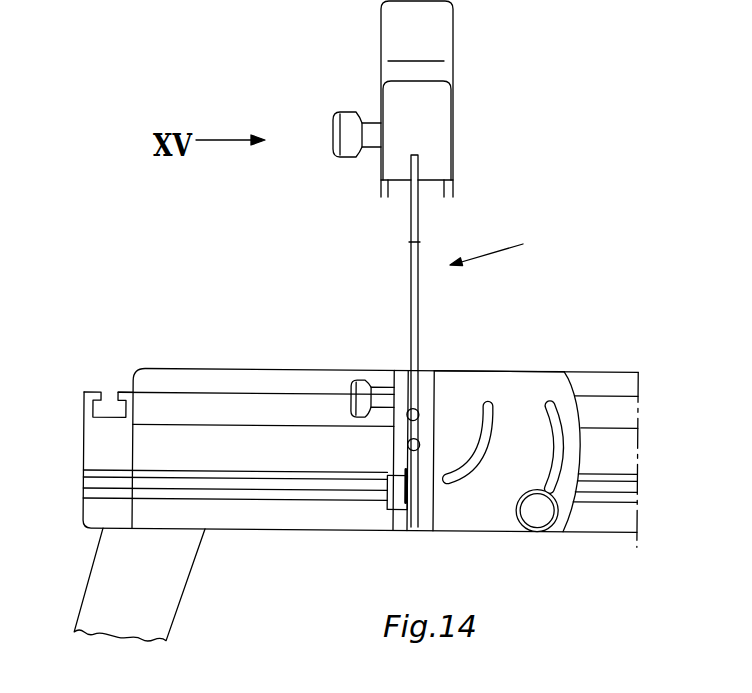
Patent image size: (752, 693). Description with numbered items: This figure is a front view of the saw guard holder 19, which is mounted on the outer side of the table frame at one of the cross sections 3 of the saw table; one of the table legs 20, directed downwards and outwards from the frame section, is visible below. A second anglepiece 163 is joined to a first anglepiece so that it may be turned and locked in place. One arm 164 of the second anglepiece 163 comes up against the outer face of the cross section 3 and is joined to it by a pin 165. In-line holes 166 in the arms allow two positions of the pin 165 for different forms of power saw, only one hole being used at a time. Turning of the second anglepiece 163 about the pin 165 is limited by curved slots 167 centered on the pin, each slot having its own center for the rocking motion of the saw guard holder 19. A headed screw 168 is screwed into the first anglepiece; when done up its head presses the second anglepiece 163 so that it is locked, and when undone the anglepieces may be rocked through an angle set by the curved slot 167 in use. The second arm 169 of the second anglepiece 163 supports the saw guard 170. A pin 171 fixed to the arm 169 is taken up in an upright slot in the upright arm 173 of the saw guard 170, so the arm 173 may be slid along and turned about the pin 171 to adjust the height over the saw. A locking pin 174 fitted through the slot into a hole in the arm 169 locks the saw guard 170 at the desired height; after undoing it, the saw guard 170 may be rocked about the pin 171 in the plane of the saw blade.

The cross section 3 is at (219, 375).
The saw guard holder 19 is at (501, 246).
The legs 20 is at (167, 577).
The second anglepiece 163 is at (514, 368).
The arm 164 is at (466, 439).
The pin 165 is at (407, 443).
The in-line holes 166 is at (416, 438).
The curved slots 167 is at (549, 398).
The screw 168 is at (535, 505).
The second arm 169 is at (423, 512).
The saw guard 170 is at (432, 31).
The pin 171 is at (400, 497).
The upright arm 173 is at (418, 243).
The locking pin 174 is at (348, 385).